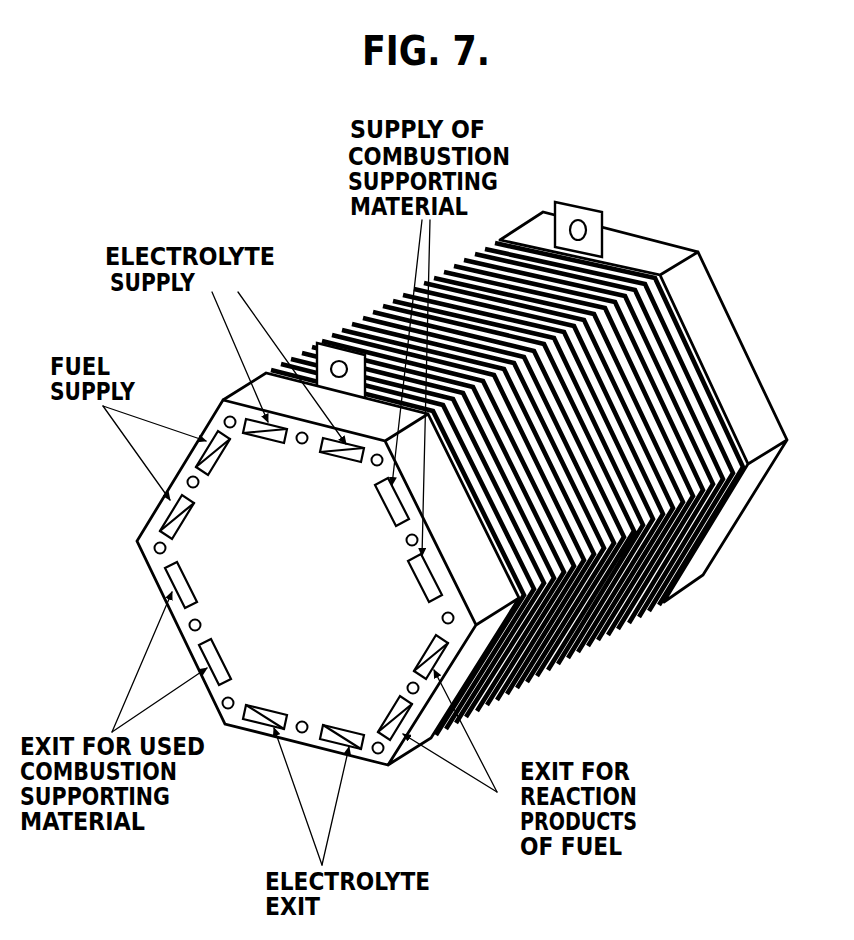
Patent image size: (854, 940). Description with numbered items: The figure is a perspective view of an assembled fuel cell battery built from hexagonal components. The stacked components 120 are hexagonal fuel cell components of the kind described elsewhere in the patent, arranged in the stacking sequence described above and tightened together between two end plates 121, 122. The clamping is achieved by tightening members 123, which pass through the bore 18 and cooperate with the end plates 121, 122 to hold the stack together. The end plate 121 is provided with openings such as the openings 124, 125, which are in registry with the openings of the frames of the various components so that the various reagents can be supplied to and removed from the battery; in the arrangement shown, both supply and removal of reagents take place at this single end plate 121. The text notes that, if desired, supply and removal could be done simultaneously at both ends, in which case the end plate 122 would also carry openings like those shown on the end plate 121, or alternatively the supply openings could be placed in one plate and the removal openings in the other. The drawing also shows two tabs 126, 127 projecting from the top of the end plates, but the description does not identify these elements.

The bore 18 is at (462, 467).
The stacked components 120 is at (622, 628).
The end plate 121 is at (328, 522).
The end plate 122 is at (643, 359).
The tightening members 123 is at (231, 428).
The opening 124 is at (420, 655).
The opening 125 is at (390, 712).
The terminal tab 126 is at (343, 348).
The terminal tab 127 is at (580, 216).